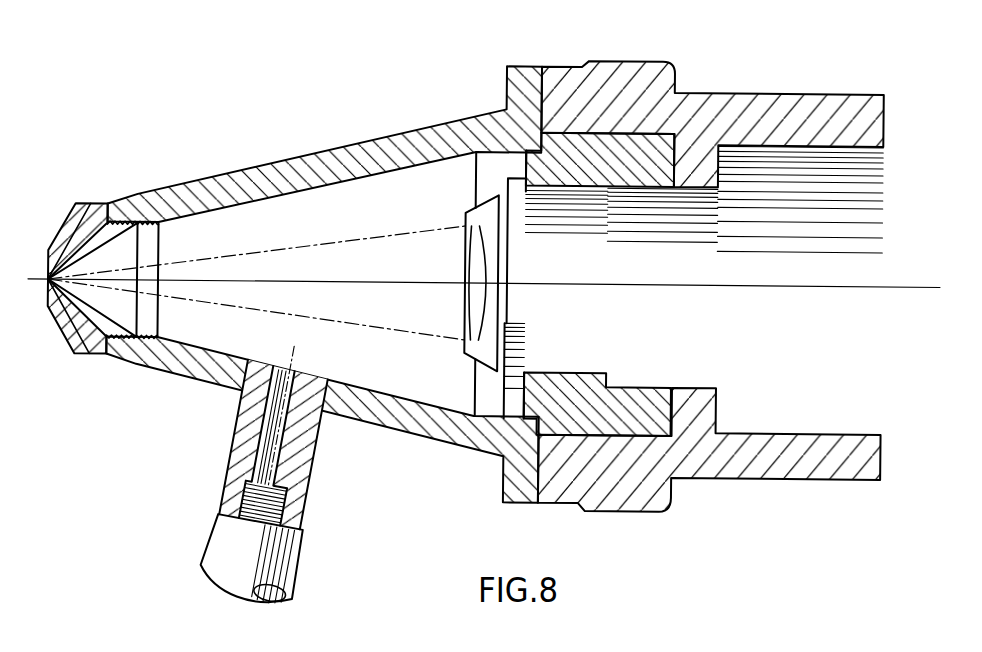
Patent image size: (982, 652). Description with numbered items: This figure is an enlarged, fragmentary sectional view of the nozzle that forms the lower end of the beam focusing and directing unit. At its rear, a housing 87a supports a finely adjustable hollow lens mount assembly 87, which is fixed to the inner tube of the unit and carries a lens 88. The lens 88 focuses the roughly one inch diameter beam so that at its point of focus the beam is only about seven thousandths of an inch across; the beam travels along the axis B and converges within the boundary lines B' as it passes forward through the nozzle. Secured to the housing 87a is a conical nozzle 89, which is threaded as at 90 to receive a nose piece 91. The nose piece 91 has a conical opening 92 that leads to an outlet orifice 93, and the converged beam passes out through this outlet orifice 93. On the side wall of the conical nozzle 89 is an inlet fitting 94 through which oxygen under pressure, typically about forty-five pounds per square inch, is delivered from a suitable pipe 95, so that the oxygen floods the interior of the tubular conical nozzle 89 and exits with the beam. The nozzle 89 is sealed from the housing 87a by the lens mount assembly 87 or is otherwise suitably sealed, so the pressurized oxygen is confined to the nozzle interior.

The lens mount assembly 87 is at (491, 199).
The housing 87a is at (790, 100).
The lens 88 is at (482, 308).
The conical nozzle 89 is at (358, 149).
The threads 90 is at (128, 222).
The nose piece 91 is at (91, 211).
The conical opening 92 is at (88, 240).
The outlet orifice 93 is at (48, 282).
The inlet fitting 94 is at (316, 460).
The pipe 95 is at (290, 560).
The optical axis B is at (484, 253).
The beam boundary line B' is at (256, 280).